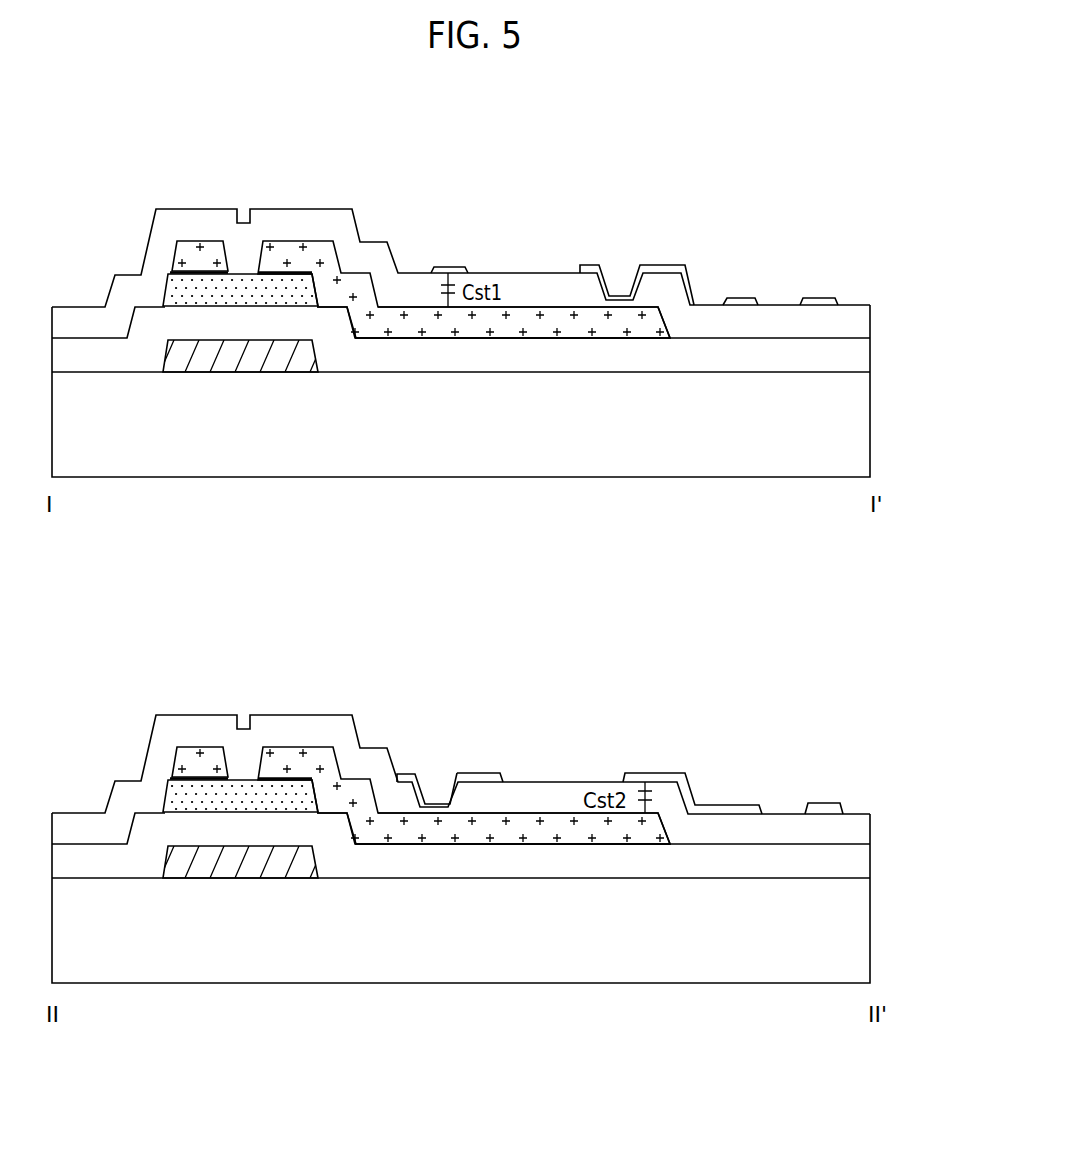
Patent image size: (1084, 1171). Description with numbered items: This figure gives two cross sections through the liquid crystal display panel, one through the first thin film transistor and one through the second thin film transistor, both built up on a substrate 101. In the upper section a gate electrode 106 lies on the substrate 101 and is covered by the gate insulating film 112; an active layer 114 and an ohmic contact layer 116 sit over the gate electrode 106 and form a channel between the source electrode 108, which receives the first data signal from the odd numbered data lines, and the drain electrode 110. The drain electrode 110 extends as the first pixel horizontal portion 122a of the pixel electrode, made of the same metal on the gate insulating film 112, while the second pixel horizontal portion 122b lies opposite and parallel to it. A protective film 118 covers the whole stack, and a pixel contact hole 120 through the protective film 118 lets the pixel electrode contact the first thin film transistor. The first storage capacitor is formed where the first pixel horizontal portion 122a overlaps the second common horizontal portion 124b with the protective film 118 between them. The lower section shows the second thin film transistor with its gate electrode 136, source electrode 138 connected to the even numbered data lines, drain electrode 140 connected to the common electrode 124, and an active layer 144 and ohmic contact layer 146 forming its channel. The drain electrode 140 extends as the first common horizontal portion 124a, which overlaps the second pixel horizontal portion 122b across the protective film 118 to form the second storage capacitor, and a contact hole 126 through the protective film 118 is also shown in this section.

The substrate 101 is at (870, 426).
The gate electrode 106 is at (183, 372).
The source electrode 108 is at (195, 241).
The drain electrode 110 is at (292, 241).
The gate insulating film 112 is at (870, 354).
The active layer 114 is at (292, 300).
The ohmic contact layer 116 is at (172, 276).
The protective film 118 is at (870, 322).
The pixel contact hole 120 is at (620, 279).
The first pixel horizontal portion 122a is at (513, 322).
The second pixel horizontal portion 122b is at (739, 297).
The common electrode 124 is at (817, 297).
The first common horizontal portion 124a is at (513, 828).
The second common horizontal portion 124b is at (449, 267).
The storage contact hole 126 is at (431, 787).
The gate electrode 136 is at (183, 878).
The source electrode 138 is at (195, 747).
The drain electrode 140 is at (294, 747).
The active layer 144 is at (292, 806).
The ohmic contact layer 146 is at (172, 782).